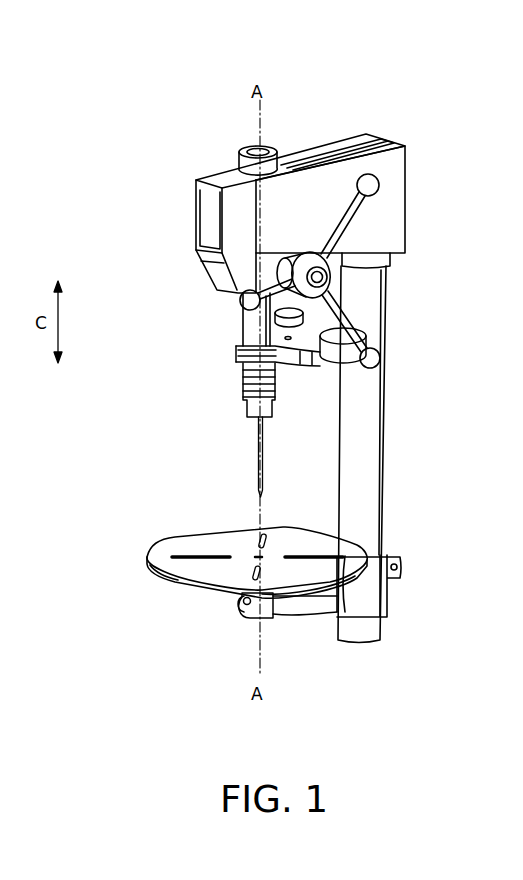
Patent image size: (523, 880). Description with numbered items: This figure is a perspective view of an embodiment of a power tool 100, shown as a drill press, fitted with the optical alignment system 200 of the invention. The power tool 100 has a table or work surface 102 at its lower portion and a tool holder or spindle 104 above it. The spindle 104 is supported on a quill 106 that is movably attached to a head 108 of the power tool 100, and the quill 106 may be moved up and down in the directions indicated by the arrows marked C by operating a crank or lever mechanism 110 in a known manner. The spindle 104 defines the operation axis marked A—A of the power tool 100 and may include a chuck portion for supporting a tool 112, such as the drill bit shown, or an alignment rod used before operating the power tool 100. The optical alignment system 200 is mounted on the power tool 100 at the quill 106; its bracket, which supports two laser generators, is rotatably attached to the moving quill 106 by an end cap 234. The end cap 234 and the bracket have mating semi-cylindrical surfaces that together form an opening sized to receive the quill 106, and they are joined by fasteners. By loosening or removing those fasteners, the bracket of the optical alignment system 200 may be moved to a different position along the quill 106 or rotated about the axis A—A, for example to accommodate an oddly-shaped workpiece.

The power tool 100 is at (423, 185).
The table or work surface 102 is at (212, 568).
The tool holder or spindle 104 is at (240, 408).
The quill 106 is at (243, 323).
The head 108 is at (197, 202).
The crank or lever mechanism 110 is at (323, 291).
The tool 112 is at (255, 475).
The optical alignment system 200 is at (294, 366).
The end cap 234 is at (503, 652).